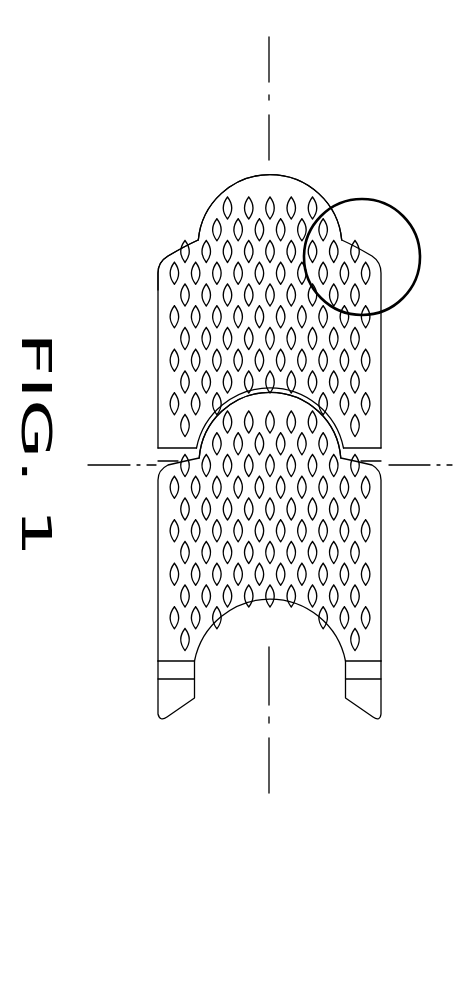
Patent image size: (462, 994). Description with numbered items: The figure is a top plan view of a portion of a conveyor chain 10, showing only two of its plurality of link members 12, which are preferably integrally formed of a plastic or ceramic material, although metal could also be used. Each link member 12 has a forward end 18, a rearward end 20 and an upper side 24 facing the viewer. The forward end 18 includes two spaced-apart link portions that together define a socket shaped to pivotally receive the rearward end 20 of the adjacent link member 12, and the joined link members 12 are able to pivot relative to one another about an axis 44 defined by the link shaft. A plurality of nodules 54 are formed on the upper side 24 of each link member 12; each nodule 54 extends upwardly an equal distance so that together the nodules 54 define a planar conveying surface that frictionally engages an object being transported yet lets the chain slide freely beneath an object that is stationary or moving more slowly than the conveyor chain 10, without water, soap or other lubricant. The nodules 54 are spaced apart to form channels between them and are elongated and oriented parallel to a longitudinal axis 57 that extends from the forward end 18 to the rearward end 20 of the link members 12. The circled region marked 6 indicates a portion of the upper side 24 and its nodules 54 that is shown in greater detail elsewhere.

The conveyor chain 10 is at (273, 435).
The link member 12 is at (158, 363).
The forward end 18 is at (358, 434).
The rearward end 20 is at (227, 190).
The upper side 24 is at (165, 270).
The axis 44 is at (432, 470).
The nodules 54 is at (207, 250).
The longitudinal axis 57 is at (270, 763).
The detail circle 6 is at (398, 212).